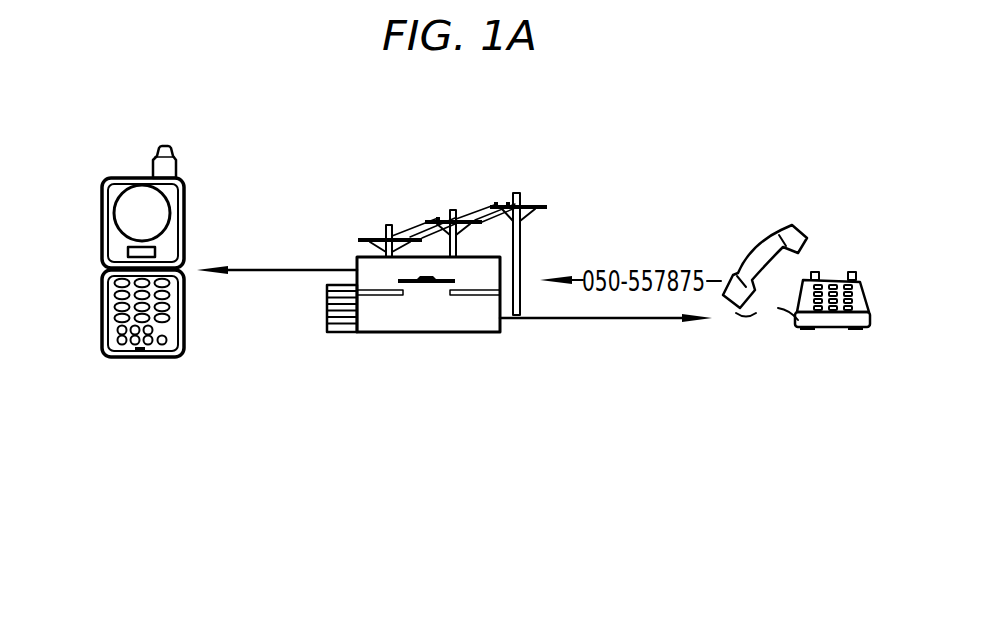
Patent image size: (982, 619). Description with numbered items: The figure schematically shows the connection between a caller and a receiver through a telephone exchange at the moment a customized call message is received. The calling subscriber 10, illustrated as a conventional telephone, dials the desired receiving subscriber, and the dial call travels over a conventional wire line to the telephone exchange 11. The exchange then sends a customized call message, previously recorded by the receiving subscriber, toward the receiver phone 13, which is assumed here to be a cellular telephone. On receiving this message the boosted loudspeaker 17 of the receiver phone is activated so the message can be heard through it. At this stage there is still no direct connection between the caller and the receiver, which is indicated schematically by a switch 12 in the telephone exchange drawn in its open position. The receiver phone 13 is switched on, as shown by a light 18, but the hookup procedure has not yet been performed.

The calling subscriber 10 is at (830, 280).
The telephone exchange 11 is at (437, 296).
The switch 12 is at (423, 293).
The receiver phone 13 is at (149, 251).
The boosted loudspeaker 17 is at (113, 218).
The light 18 is at (128, 253).